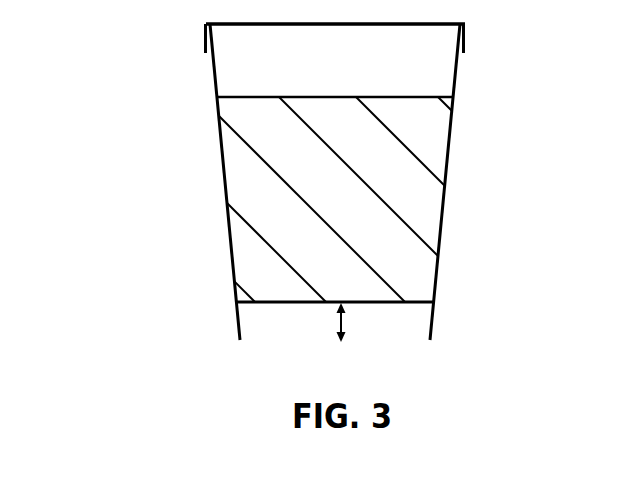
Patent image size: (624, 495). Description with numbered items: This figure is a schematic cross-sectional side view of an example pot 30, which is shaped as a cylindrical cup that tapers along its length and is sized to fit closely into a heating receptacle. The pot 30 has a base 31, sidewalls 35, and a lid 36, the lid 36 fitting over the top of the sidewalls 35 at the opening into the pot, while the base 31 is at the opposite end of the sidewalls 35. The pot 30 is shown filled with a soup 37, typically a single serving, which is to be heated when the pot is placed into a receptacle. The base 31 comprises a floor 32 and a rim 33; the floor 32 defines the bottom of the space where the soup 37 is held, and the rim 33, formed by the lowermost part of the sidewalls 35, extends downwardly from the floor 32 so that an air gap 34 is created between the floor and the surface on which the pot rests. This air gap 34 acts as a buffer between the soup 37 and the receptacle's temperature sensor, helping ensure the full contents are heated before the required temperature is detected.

The pot 30 is at (86, 43).
The base 31 is at (196, 302).
The floor 32 is at (373, 302).
The rim 33 is at (436, 325).
The air gap 34 is at (340, 322).
The sidewalls 35 is at (225, 180).
The lid 36 is at (205, 45).
The soup 37 is at (400, 97).